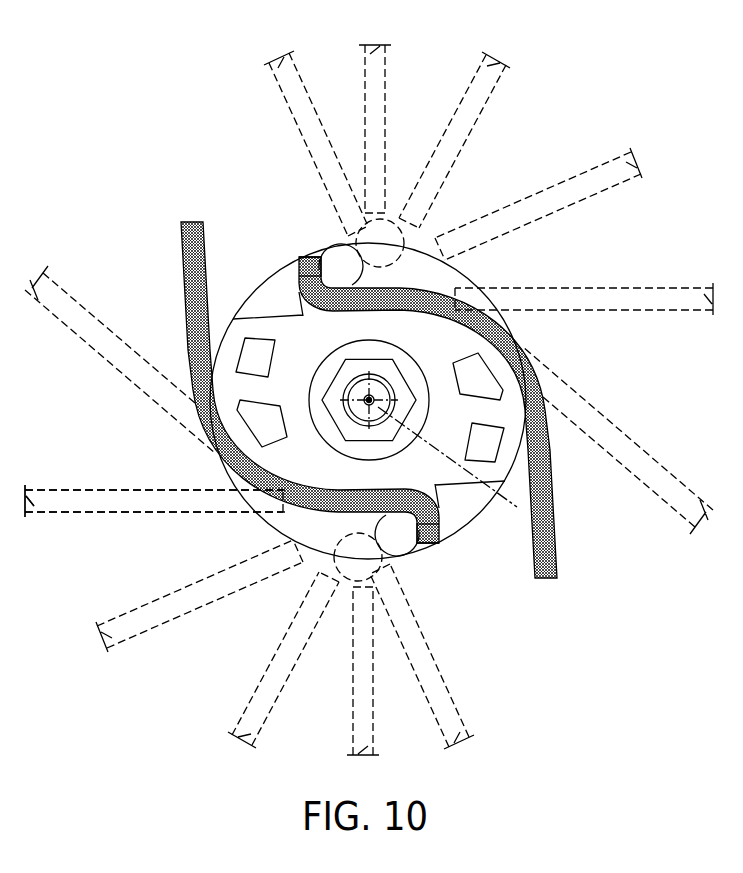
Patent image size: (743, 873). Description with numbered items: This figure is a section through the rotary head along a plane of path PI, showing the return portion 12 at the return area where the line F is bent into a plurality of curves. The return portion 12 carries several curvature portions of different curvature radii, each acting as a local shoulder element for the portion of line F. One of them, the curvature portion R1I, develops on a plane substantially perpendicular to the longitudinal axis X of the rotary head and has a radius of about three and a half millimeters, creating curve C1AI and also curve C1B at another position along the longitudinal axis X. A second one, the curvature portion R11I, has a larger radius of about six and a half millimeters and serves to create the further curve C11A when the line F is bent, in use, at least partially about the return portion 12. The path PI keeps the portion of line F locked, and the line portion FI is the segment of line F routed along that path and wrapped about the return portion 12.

The return portion 12 is at (334, 284).
The curvature portion R11I is at (351, 276).
The curvature portion R1I is at (352, 245).
The curve C11A is at (368, 401).
The longitudinal axis X is at (517, 507).
The line F is at (562, 508).
The fluid flow direction FI is at (178, 267).
The path PI is at (142, 485).